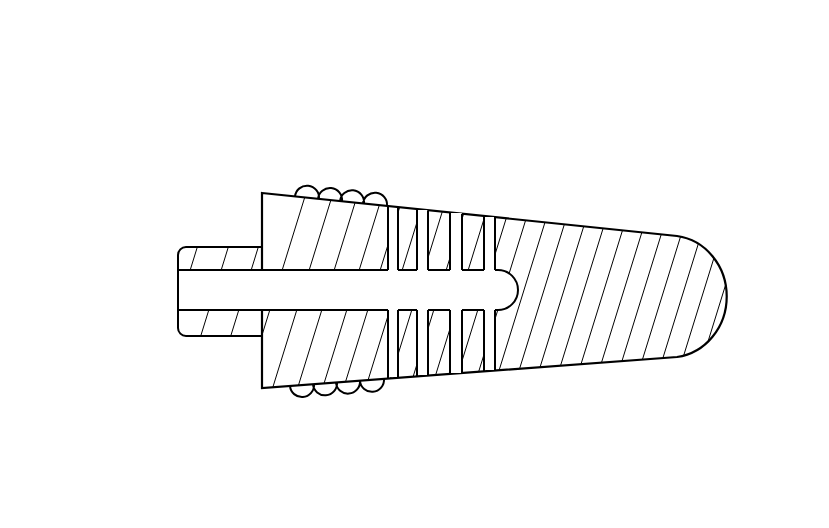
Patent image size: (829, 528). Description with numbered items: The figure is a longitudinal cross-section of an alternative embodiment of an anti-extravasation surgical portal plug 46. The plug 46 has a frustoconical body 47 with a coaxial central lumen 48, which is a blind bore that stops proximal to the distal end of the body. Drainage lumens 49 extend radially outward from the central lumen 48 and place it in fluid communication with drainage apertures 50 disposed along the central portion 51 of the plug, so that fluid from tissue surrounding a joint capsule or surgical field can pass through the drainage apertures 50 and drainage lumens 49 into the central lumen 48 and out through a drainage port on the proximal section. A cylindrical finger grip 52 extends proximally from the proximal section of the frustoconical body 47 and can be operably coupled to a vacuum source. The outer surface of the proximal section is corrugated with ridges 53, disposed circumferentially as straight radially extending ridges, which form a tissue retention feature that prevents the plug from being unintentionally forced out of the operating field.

The surgical portal plug 46 is at (593, 172).
The frustoconical body 47 is at (549, 361).
The central lumen 48 is at (157, 290).
The drainage lumens 49 is at (393, 218).
The drainage apertures 50 is at (423, 378).
The central portion 51 is at (467, 180).
The finger grip 52 is at (213, 327).
The ridges 53 is at (326, 190).